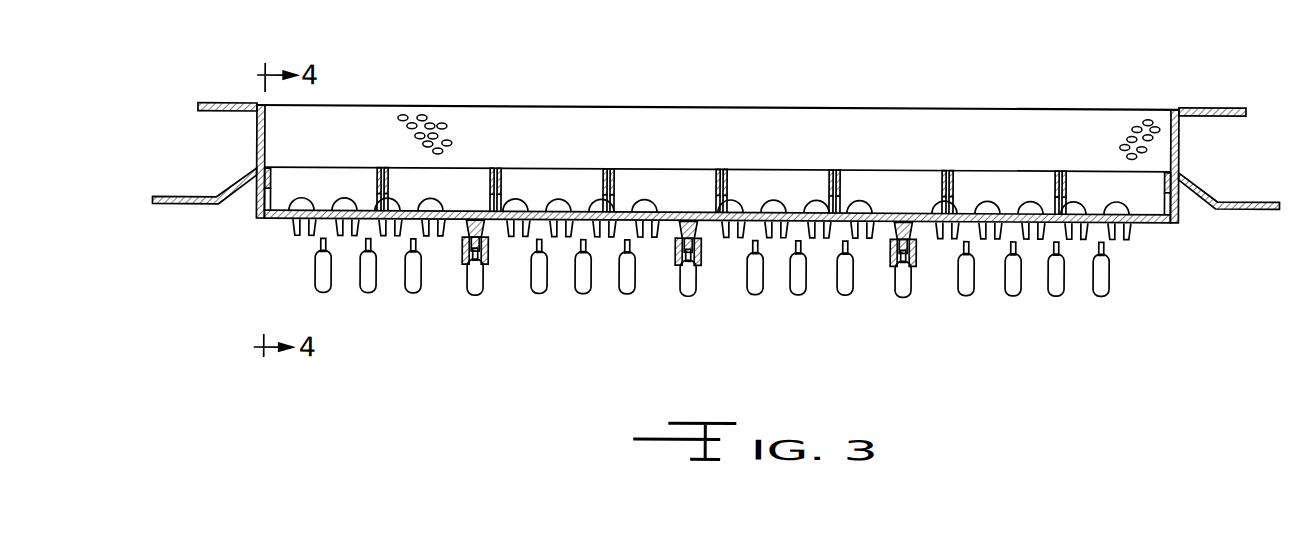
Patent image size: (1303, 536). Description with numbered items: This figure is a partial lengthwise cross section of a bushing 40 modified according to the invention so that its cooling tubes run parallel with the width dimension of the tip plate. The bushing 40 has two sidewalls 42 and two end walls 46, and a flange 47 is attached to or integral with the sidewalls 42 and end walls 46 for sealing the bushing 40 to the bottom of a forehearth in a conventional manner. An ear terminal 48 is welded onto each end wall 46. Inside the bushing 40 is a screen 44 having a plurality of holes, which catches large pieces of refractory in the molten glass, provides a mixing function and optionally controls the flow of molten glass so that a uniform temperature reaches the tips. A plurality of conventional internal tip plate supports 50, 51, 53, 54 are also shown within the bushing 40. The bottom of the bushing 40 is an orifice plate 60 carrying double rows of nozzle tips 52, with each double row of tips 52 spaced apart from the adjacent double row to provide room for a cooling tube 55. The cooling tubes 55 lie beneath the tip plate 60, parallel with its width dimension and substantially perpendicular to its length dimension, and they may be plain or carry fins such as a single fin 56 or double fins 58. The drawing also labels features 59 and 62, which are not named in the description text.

The bushing 40 is at (1166, 100).
The sidewalls 42 is at (943, 104).
The screen 44 is at (433, 122).
The end walls 46 is at (257, 128).
The flange 47 is at (222, 103).
The ear terminal 48 is at (182, 205).
The internal tip plate support 50 is at (1053, 178).
The internal tip plate support 51 is at (370, 183).
The tips 52 is at (293, 227).
The internal tip plate support 53 is at (1050, 180).
The internal tip plate support 54 is at (388, 173).
The cooling tube 55 is at (372, 292).
The single fin 56 is at (1013, 242).
The double fins 58 is at (490, 249).
The nozzle 59 is at (890, 225).
The orifice plate 60 is at (280, 218).
The end projection 62 is at (1140, 232).